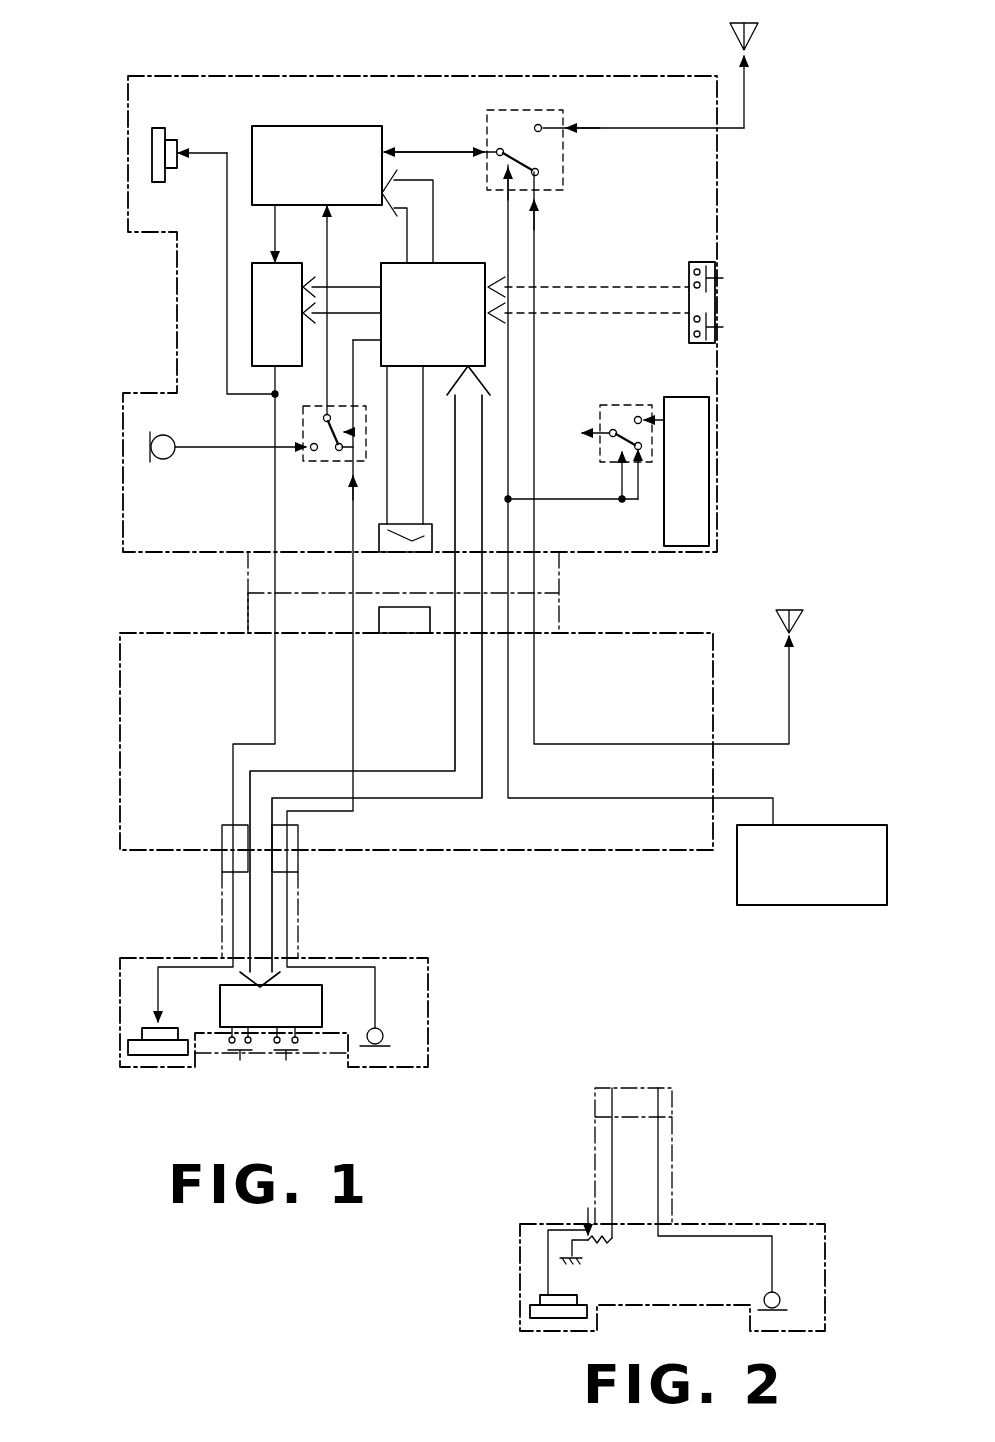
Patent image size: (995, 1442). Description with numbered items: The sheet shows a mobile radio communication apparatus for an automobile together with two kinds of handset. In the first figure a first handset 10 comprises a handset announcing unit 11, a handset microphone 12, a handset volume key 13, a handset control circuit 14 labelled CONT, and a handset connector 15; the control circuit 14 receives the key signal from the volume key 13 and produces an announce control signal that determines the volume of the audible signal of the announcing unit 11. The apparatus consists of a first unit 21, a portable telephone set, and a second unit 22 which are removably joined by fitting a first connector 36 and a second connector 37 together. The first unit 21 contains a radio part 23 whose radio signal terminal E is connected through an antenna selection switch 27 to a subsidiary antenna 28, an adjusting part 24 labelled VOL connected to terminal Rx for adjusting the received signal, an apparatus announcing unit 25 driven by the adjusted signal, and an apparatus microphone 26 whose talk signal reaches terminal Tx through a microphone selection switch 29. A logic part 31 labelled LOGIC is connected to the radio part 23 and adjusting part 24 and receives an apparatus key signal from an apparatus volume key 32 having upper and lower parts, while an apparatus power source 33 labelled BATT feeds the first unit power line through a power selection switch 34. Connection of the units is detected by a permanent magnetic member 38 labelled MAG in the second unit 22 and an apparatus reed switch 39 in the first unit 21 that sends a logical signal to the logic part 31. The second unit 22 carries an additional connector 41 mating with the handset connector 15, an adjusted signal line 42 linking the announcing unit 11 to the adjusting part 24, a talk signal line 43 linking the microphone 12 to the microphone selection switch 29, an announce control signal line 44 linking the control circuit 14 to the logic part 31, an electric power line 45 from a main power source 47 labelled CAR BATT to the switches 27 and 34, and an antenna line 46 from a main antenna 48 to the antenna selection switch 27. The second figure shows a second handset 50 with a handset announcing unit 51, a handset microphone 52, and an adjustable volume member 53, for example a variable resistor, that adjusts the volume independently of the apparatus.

In FIG. 1, the first handset 10 is at (125, 958).
In FIG. 1, the handset announcing unit 11 is at (128, 1046).
In FIG. 1, the handset microphone 12 is at (385, 1050).
In FIG. 1, the handset volume key 13 is at (320, 1058).
In FIG. 1, the handset control circuit 14 is at (218, 1012).
In FIG. 1, the handset connector 15 is at (298, 918).
In FIG. 1, the first unit 21 is at (178, 72).
In FIG. 1, the second unit 22 is at (147, 632).
In FIG. 1, the radio part 23 is at (300, 126).
In FIG. 1, the adjusting part 24 is at (262, 263).
In FIG. 1, the apparatus announcing unit 25 is at (162, 128).
In FIG. 1, the apparatus microphone 26 is at (160, 462).
In FIG. 1, the antenna selection switch 27 is at (565, 155).
In FIG. 1, the subsidiary antenna 28 is at (758, 32).
In FIG. 1, the microphone selection switch 29 is at (305, 462).
In FIG. 1, the logic part 31 is at (445, 263).
In FIG. 1, the apparatus volume key 32 is at (690, 262).
In FIG. 1, the apparatus power source 33 is at (682, 397).
In FIG. 1, the power selection switch 34 is at (624, 405).
In FIG. 1, the first connector 36 is at (245, 578).
In FIG. 1, the second connector 37 is at (245, 617).
In FIG. 1, the permanent magnetic member 38 is at (379, 620).
In FIG. 1, the apparatus reed switch 39 is at (379, 536).
In FIG. 1, the additional connector 41 is at (290, 855).
In FIG. 1, the adjusted signal line 42 is at (275, 682).
In FIG. 1, the talk signal line 43 is at (354, 682).
In FIG. 1, the announce control signal line 44 is at (455, 732).
In FIG. 1, the electric power line 45 is at (508, 768).
In FIG. 1, the antenna line 46 is at (625, 744).
In FIG. 1, the main power source 47 is at (810, 825).
In FIG. 1, the main antenna 48 is at (800, 618).
In FIG. 2, the second handset 50 is at (557, 1220).
In FIG. 2, the handset announcing unit 51 is at (530, 1310).
In FIG. 2, the handset microphone 52 is at (782, 1300).
In FIG. 2, the adjustable volume member 53 is at (600, 1245).